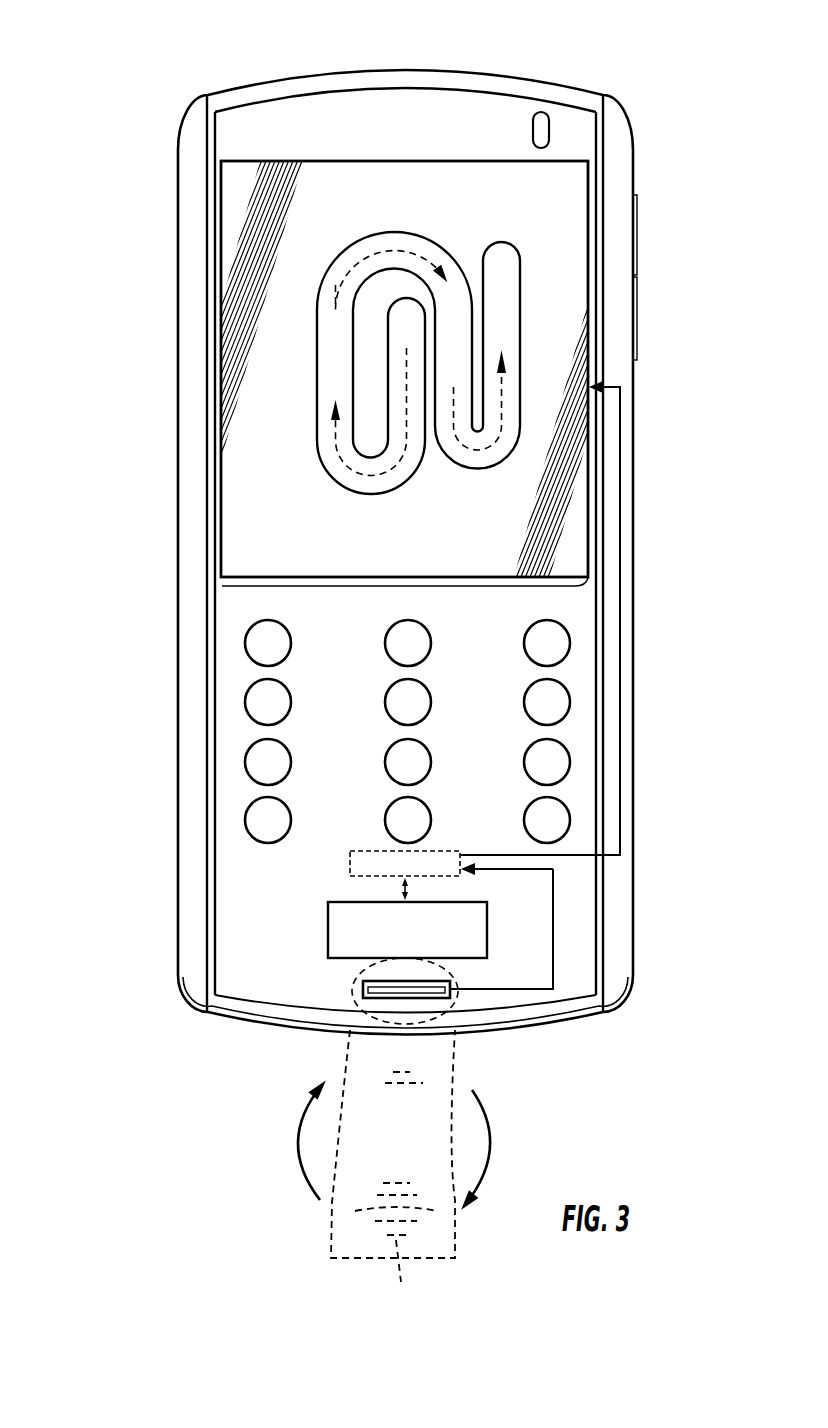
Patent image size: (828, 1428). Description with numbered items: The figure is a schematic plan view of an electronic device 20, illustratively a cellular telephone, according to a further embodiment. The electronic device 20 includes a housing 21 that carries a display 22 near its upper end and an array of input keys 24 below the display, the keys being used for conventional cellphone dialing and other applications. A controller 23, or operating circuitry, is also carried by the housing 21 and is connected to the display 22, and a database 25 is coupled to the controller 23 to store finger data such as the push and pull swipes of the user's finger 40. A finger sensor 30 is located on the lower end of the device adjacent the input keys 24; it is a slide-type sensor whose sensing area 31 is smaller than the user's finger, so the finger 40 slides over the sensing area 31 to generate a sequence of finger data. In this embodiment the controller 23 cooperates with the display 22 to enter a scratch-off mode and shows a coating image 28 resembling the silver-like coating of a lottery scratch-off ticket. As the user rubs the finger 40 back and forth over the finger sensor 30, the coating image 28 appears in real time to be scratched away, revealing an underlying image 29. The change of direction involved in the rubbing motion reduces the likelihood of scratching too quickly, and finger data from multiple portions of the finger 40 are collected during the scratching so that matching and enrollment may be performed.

The electronic device 20 is at (290, 60).
The housing 21 is at (178, 147).
The display 22 is at (221, 233).
The controller 23 is at (348, 863).
The input keys 24 is at (262, 762).
The database 25 is at (328, 912).
The coating image 28 is at (267, 403).
The underlying image 29 is at (327, 347).
The finger sensor 30 is at (363, 992).
The sensing area 31 is at (432, 966).
The finger 40 is at (347, 1055).